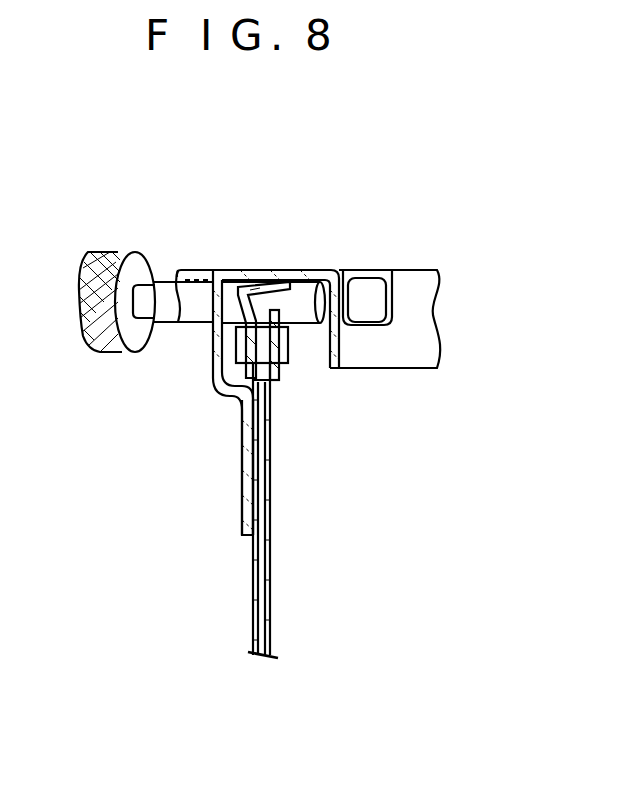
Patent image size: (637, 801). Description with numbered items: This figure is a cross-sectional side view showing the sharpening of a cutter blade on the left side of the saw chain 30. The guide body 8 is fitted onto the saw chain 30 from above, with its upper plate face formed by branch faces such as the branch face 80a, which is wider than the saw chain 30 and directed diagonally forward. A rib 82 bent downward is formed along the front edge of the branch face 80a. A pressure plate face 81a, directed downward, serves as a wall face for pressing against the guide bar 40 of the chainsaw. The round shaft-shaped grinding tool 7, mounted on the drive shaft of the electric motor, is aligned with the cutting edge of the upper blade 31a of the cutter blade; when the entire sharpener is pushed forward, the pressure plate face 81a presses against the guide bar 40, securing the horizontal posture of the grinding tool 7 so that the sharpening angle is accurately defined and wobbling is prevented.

The grinding tool 7 is at (298, 290).
The guide body 8 is at (410, 273).
The branch face 80a is at (250, 273).
The rib 82 is at (413, 327).
The upper blade 31a is at (280, 283).
The saw chain 30 is at (280, 373).
The pressure plate face 81a is at (248, 480).
The guide bar 40 is at (253, 573).